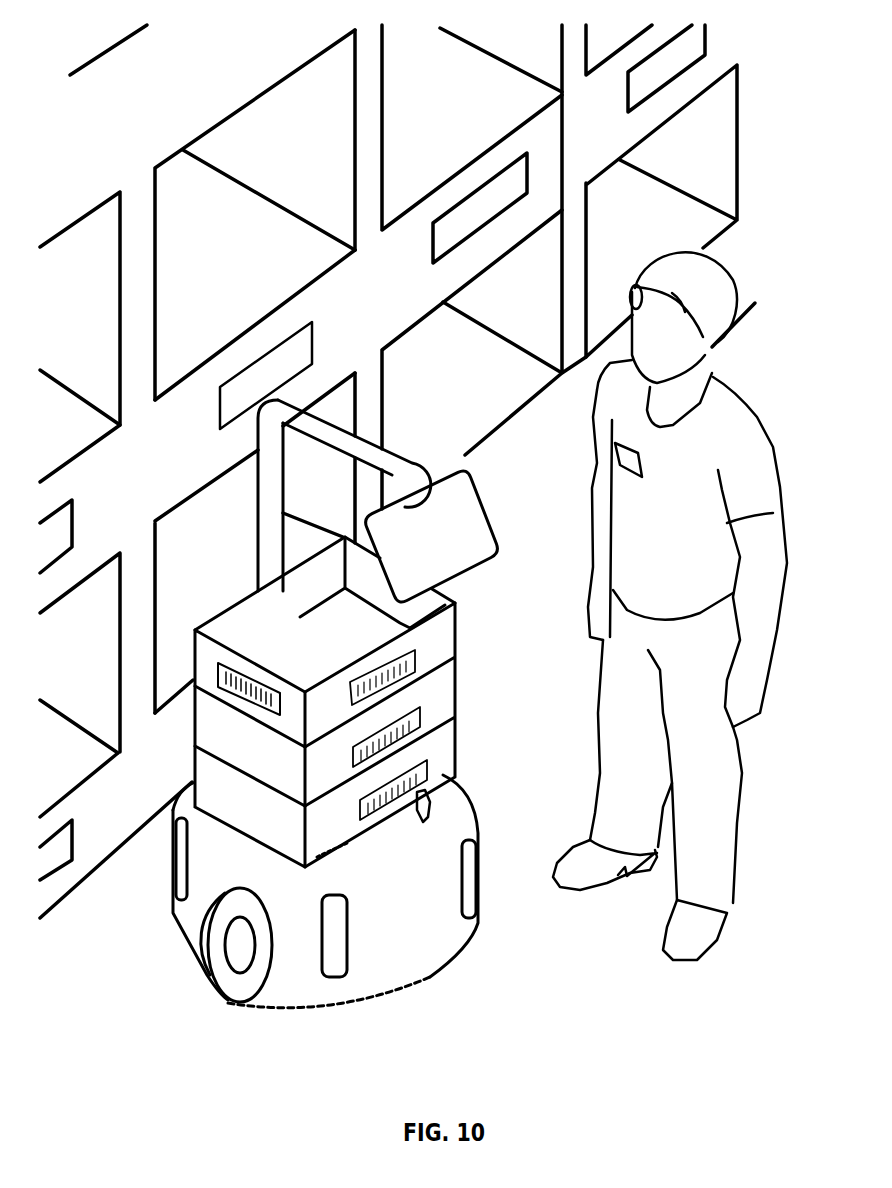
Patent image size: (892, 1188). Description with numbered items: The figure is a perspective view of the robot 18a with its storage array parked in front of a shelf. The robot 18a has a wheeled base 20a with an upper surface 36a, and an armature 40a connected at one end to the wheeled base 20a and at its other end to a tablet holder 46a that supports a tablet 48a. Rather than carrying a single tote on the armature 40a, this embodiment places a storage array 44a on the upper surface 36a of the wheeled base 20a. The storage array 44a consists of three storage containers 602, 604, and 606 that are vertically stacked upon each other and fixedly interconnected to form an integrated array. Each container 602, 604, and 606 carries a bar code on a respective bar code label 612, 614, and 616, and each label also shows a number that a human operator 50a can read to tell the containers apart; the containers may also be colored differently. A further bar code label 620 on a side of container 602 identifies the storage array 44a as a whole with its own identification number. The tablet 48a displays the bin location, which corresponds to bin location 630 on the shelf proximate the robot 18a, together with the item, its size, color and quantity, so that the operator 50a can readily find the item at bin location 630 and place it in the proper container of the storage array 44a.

The bin location 630 is at (313, 323).
The armature 40a is at (258, 512).
The tablet holder 46a is at (423, 458).
The tablet 48a is at (503, 557).
The storage array 44a is at (495, 654).
The storage container 602 is at (195, 662).
The storage container 604 is at (193, 720).
The storage container 606 is at (193, 768).
The bar code label 612 is at (458, 634).
The bar code label 614 is at (458, 690).
The bar code label 616 is at (458, 747).
The bar code label 620 is at (282, 692).
The upper surface 36a is at (430, 803).
The wheeled base 20a is at (480, 840).
The robot 18a is at (427, 977).
The operator 50a is at (740, 397).